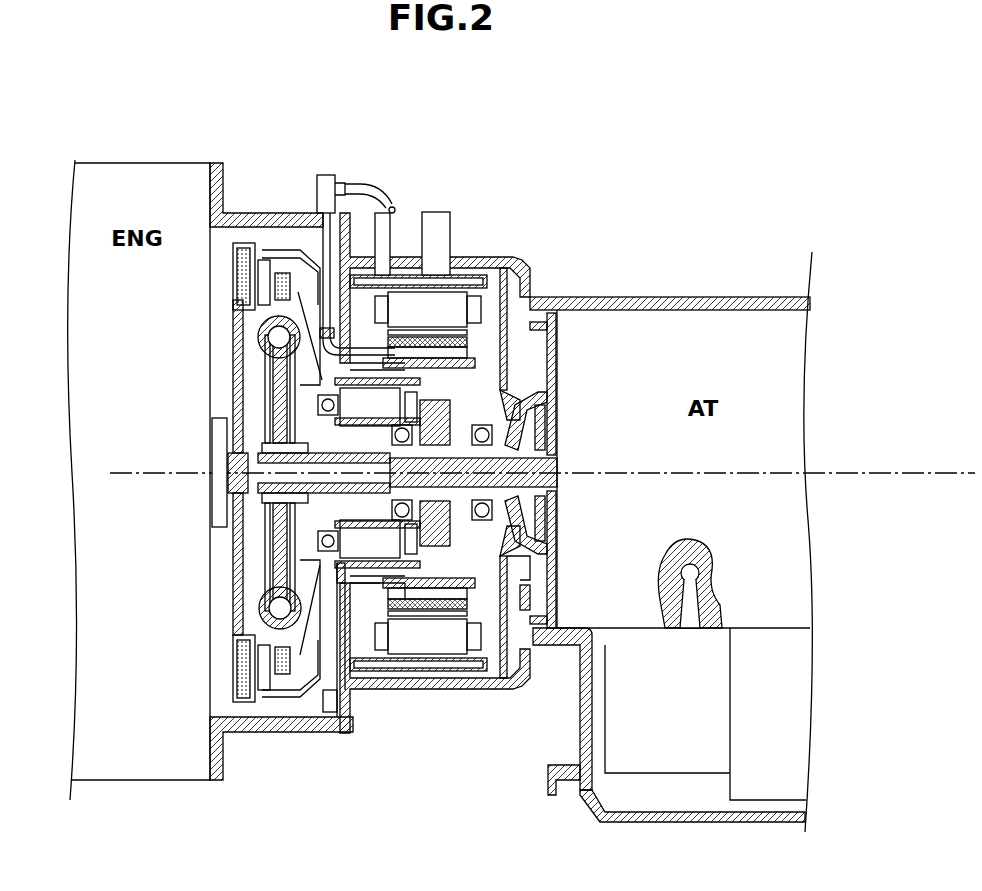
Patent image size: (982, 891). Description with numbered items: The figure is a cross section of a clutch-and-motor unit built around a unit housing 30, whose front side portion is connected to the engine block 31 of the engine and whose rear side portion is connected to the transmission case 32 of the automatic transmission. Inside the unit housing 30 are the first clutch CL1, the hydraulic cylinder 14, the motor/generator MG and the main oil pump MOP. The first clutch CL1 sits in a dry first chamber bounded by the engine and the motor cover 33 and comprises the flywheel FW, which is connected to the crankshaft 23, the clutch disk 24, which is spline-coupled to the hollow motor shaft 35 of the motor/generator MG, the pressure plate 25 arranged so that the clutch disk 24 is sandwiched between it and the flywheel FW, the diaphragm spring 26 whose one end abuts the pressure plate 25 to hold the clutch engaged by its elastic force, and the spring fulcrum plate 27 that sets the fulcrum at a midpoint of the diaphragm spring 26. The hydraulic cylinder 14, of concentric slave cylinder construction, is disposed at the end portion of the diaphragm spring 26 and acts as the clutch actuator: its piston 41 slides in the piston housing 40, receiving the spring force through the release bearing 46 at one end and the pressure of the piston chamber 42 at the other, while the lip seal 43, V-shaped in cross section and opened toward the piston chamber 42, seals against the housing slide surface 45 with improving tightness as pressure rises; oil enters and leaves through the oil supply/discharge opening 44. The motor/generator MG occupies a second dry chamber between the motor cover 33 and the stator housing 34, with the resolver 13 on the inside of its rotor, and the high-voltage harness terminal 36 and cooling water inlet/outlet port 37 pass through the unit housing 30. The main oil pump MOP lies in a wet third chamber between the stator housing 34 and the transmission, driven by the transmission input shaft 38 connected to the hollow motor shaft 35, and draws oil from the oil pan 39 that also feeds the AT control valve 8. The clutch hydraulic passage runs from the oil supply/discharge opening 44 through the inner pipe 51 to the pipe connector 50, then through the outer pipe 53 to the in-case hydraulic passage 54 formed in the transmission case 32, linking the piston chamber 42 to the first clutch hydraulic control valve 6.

The engine block 31 is at (163, 160).
The unit housing 30 is at (299, 210).
The transmission case 32 is at (620, 295).
The motor cover 33 is at (350, 292).
The stator housing 34 is at (550, 338).
The hollow motor shaft 35 is at (283, 433).
The high-voltage harness terminal 36 is at (390, 240).
The cooling water inlet/outlet port 37 is at (432, 212).
The transmission input shaft 38 is at (540, 470).
The oil pan 39 is at (662, 824).
The piston housing 40 is at (280, 503).
The piston 41 is at (225, 518).
The piston chamber 42 is at (415, 578).
The lip seal 43 is at (325, 403).
The oil supply/discharge opening 44 is at (350, 375).
The housing slide surface 45 is at (351, 567).
The release bearing 46 is at (325, 543).
The pipe connector 50 is at (330, 175).
The inner pipe 51 is at (322, 250).
The outer pipe 53 is at (365, 184).
The in-case hydraulic passage 54 is at (700, 600).
The resolver 13 is at (535, 565).
The hydraulic cylinder 14 is at (341, 587).
The crankshaft 23 is at (236, 468).
The clutch disk 24 is at (258, 660).
The pressure plate 25 is at (282, 674).
The diaphragm spring 26 is at (300, 578).
The spring fulcrum plate 27 is at (302, 680).
The first clutch hydraulic control valve 6 is at (632, 723).
The AT control valve 8 is at (790, 690).
The first clutch CL1 is at (268, 250).
The motor/generator MG is at (448, 312).
The flywheel FW is at (233, 348).
The main oil pump MOP is at (545, 390).